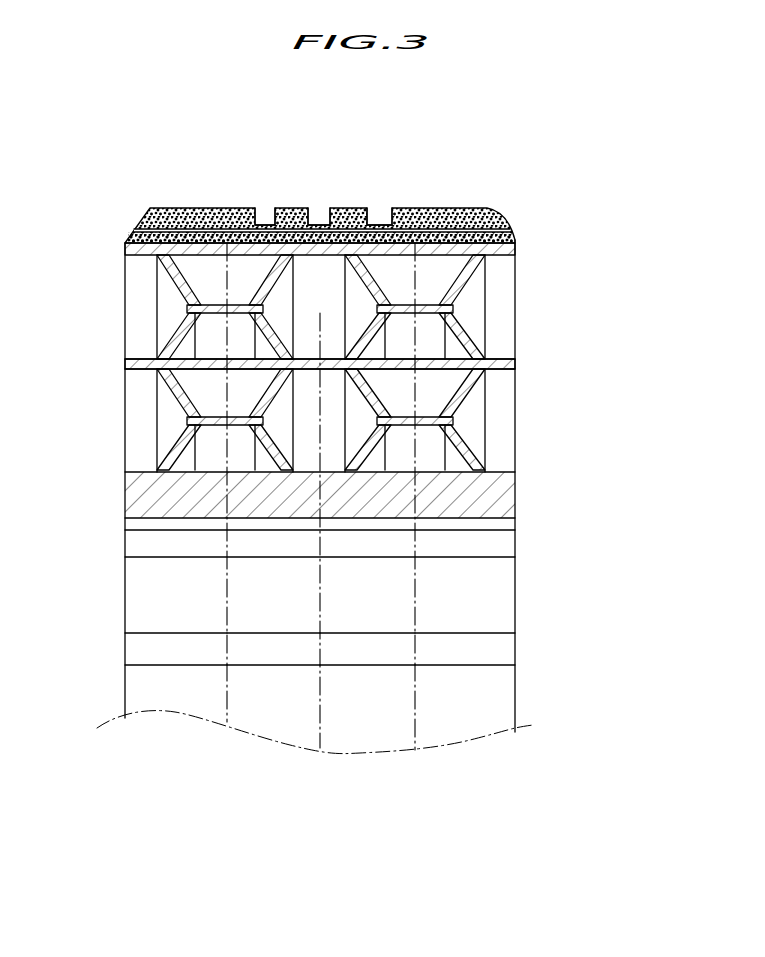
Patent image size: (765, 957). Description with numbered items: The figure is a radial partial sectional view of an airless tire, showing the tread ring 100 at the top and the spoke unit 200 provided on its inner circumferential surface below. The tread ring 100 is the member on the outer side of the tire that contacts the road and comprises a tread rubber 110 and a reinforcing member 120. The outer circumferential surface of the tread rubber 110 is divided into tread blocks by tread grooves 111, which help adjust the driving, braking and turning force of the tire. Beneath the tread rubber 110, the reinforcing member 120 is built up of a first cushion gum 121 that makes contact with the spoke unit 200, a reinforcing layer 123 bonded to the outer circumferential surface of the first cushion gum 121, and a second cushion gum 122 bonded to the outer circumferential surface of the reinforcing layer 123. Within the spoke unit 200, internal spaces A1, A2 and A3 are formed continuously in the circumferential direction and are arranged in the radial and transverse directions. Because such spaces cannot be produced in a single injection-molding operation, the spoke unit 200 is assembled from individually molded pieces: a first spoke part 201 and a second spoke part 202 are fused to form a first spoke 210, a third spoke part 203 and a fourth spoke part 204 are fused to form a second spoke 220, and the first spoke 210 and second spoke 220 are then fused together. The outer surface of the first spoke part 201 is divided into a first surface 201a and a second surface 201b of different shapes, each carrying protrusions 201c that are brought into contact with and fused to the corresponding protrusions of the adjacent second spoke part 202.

The tread ring 100 is at (413, 197).
The tread rubber 110 is at (442, 212).
The tread grooves 111 is at (263, 212).
The reinforcing member 120 is at (380, 225).
The first cushion gum 121 is at (350, 255).
The second cushion gum 122 is at (492, 210).
The reinforcing layer 123 is at (488, 235).
The spoke unit 200 is at (315, 751).
The first spoke part 201 is at (186, 605).
The second spoke part 202 is at (277, 605).
The third spoke part 203 is at (372, 605).
The fourth spoke part 204 is at (468, 605).
The first spoke 210 is at (222, 728).
The second spoke 220 is at (417, 728).
The first surface 201a is at (180, 282).
The second surface 201b is at (183, 322).
The protrusions 201c is at (212, 306).
The internal space A1 is at (211, 407).
The internal space A2 is at (427, 407).
The internal space A3 is at (327, 306).